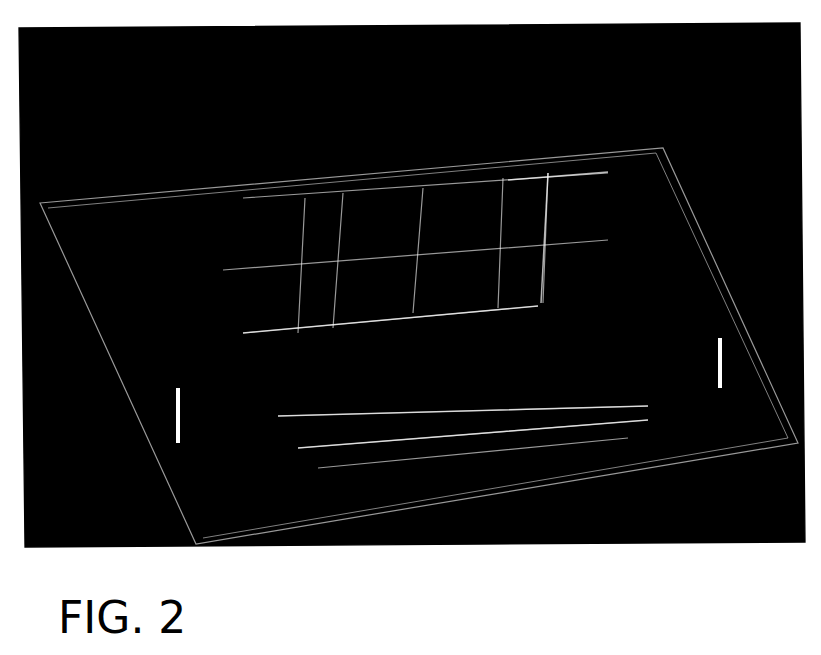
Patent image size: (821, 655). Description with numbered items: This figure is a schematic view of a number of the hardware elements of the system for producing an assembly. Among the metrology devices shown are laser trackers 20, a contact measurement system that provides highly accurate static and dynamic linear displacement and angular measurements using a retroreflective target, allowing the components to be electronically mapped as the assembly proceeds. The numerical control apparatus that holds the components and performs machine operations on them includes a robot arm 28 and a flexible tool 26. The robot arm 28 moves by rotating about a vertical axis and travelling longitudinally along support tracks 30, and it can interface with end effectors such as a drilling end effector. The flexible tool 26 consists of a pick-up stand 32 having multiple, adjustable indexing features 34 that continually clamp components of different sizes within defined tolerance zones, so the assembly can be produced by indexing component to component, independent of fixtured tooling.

The laser trackers 20 is at (172, 412).
The flexible tool 26 is at (195, 216).
The robot arm 28 is at (294, 360).
The support tracks 30 is at (463, 457).
The pick-up stand 32 is at (590, 182).
The indexing features 34 is at (530, 285).